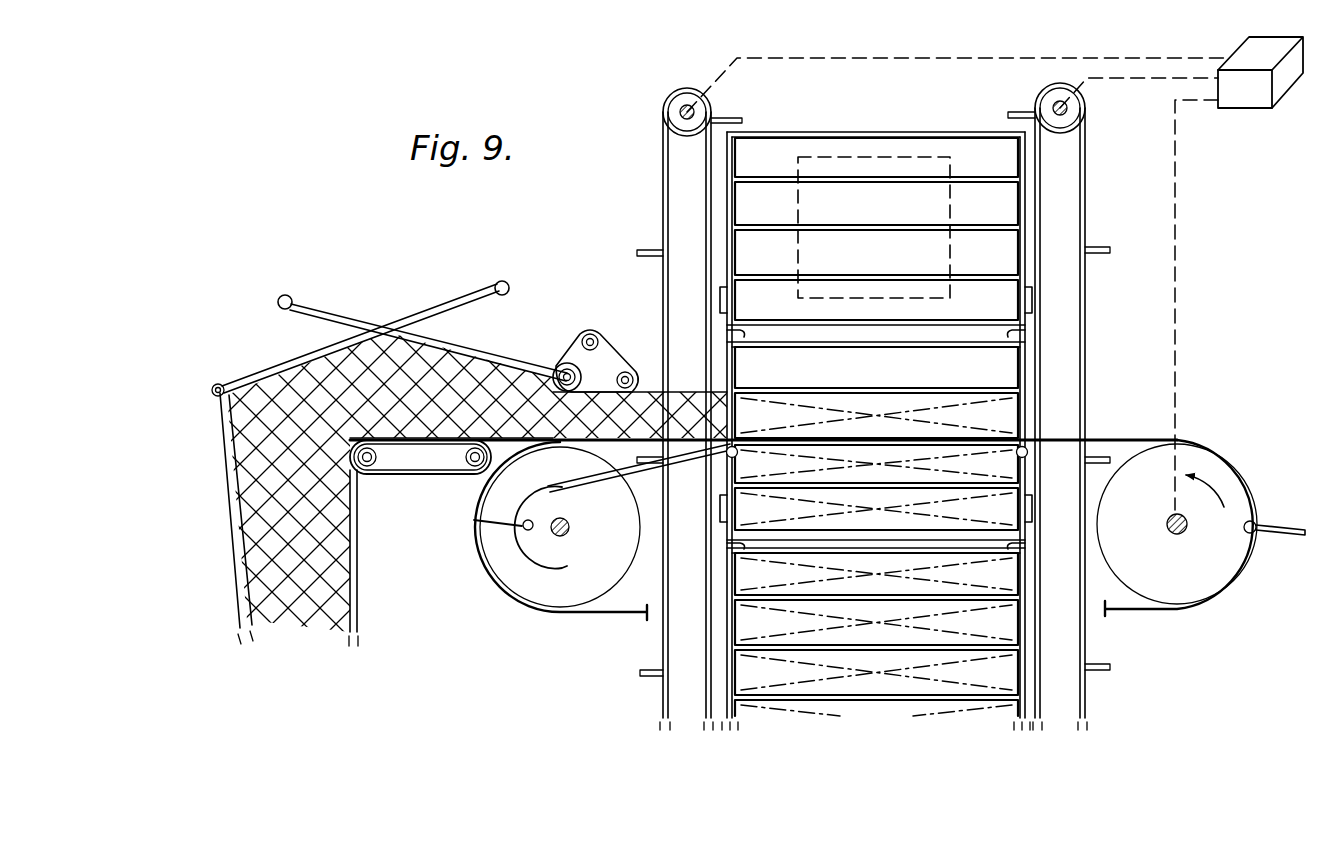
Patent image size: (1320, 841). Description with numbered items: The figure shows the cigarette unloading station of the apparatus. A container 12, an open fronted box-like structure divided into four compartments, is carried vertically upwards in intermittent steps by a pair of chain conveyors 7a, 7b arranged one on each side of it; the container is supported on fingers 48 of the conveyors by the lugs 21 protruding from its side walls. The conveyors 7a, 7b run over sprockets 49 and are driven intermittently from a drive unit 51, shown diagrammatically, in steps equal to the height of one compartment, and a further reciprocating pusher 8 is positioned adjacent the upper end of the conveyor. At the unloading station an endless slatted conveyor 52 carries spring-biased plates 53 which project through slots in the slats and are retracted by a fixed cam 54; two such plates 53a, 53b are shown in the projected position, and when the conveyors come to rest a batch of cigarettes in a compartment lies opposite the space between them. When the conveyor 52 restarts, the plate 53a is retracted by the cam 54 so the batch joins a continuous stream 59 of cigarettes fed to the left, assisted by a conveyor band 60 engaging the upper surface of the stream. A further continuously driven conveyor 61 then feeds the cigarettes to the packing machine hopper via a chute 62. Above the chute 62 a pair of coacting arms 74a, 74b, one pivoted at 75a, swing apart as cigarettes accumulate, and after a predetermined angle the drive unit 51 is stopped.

The chain conveyor 7a is at (662, 640).
The chain conveyor 7b is at (1110, 666).
The reciprocating pusher 8 is at (857, 157).
The container 12 is at (815, 112).
The lug 21 is at (720, 297).
The fingers 48 is at (727, 334).
The sprockets 49 is at (663, 113).
The drive unit 51 is at (1252, 100).
The endless conveyor 52 is at (1256, 480).
The plates 53 is at (481, 543).
The plate 53a is at (746, 420).
The plate 53b is at (1007, 418).
The fixed cam 54 is at (598, 490).
The continuous stream of cigarettes 59 is at (645, 406).
The conveyor band 60 is at (580, 344).
The continuously driven conveyor 61 is at (425, 470).
The chute 62 is at (268, 565).
The coacting arm 74a is at (335, 314).
The coacting arm 74b is at (450, 308).
The pivot 75a is at (223, 384).